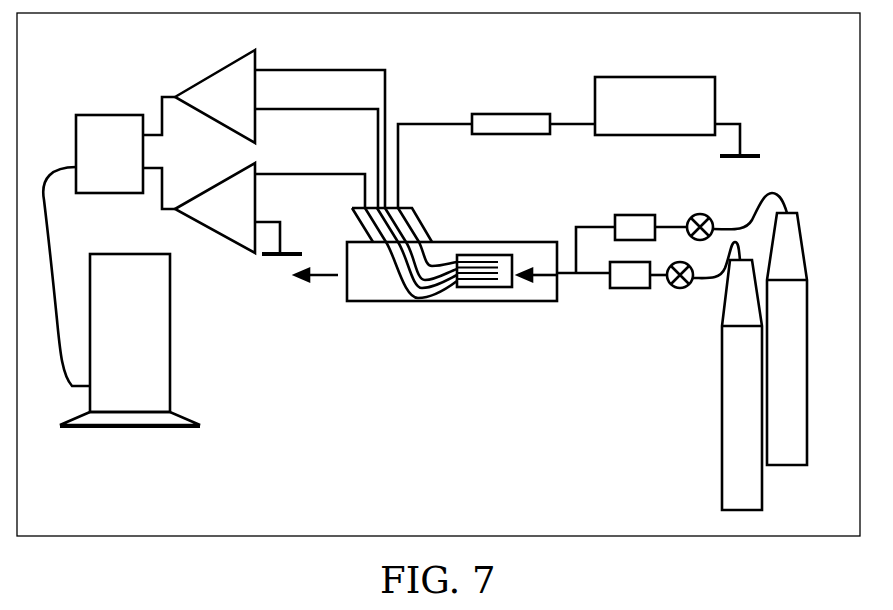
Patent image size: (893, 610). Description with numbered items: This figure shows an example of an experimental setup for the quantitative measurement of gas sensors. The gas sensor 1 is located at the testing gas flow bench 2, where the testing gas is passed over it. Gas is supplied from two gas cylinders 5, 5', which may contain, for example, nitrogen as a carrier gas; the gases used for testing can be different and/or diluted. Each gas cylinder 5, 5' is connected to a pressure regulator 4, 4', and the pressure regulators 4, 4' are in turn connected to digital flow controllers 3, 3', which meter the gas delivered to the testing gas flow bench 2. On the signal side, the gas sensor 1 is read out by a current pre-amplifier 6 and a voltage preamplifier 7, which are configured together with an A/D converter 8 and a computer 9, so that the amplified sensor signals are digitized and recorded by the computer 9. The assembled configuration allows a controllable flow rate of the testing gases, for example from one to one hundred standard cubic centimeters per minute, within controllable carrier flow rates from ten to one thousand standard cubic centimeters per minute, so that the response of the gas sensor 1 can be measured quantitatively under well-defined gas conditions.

The gas sensor 1 is at (485, 295).
The testing gas flow bench 2 is at (537, 307).
The digital flow controller 3 is at (622, 230).
The digital flow controller 3' is at (638, 298).
The pressure regulator 4 is at (737, 213).
The pressure regulator 4' is at (703, 288).
The gas cylinder 5 is at (742, 385).
The gas cylinder 5' is at (787, 339).
The current pre-amplifier 6 is at (254, 222).
The voltage preamplifier 7 is at (264, 123).
The A/D converter 8 is at (109, 139).
The computer 9 is at (121, 297).